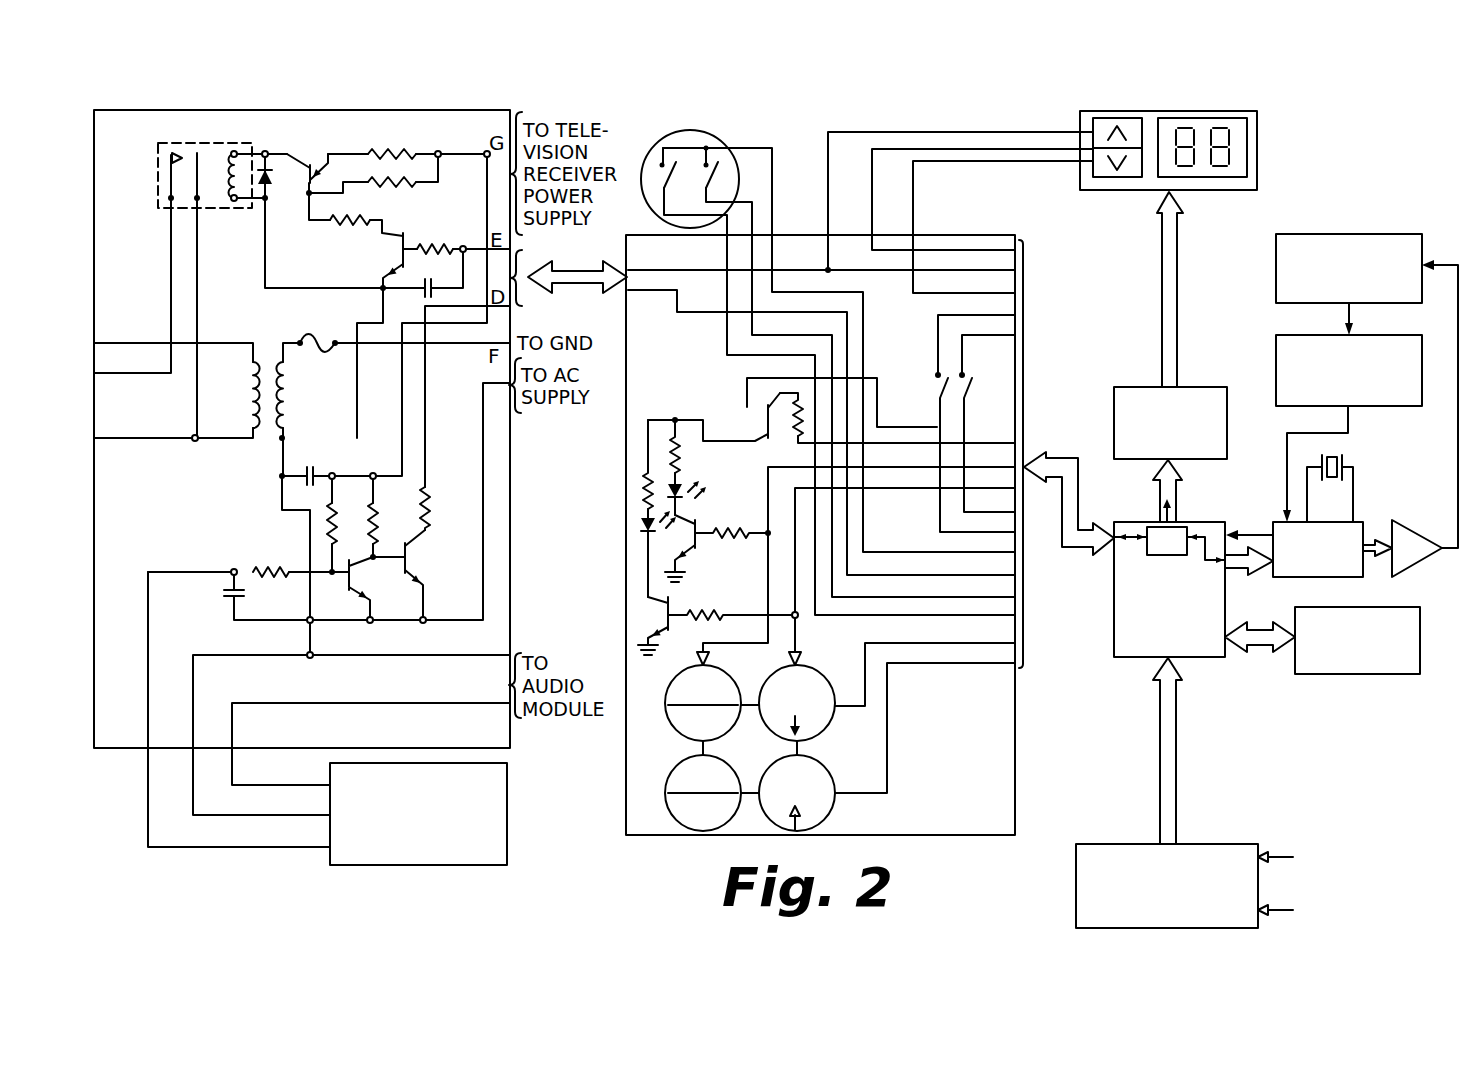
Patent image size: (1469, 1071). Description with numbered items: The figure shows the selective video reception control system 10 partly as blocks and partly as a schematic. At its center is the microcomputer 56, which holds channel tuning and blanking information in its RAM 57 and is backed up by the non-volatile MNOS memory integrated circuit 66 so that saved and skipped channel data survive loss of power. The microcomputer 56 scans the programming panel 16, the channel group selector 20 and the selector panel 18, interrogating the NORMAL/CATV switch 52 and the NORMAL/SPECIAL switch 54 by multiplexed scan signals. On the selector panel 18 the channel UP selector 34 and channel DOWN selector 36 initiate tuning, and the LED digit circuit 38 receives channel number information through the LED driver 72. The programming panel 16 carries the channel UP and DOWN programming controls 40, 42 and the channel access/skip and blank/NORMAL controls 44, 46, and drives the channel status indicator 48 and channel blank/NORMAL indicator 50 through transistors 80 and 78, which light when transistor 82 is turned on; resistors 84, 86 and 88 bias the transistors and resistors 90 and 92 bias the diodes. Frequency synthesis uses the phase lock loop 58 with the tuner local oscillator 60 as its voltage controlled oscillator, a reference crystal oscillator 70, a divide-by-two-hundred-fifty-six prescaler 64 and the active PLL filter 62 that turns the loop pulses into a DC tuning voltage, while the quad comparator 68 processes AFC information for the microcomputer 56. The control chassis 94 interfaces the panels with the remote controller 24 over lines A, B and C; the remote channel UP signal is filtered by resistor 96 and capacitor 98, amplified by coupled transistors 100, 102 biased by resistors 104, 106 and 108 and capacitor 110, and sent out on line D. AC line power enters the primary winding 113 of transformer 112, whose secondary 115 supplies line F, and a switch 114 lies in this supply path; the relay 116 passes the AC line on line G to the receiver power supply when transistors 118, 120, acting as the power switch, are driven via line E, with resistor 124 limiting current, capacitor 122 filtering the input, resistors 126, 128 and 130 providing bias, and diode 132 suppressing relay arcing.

The selective video reception control system 10 is at (1362, 725).
The programming panel 16 is at (660, 838).
The selector panel 18 is at (1169, 131).
The channel group selector 20 is at (683, 130).
The remote controller 24 is at (507, 818).
The channel UP selector 34 is at (1128, 125).
The channel DOWN selector 36 is at (1100, 167).
The LED digit circuit 38 is at (1235, 169).
The channel UP programming control 40 is at (835, 774).
The channel DOWN programming control 42 is at (833, 709).
The channel access/skip control 44 is at (670, 726).
The blank/NORMAL control 46 is at (665, 791).
The channel status indicator 48 is at (666, 482).
The channel blank/NORMAL indicator 50 is at (641, 524).
The NORMAL/CATV switch 52 is at (938, 373).
The NORMAL/SPECIAL (AFC) switch 54 is at (978, 358).
The microcomputer 56 is at (1169, 652).
The RAM 57 is at (1169, 545).
The phase lock loop 58 is at (1343, 578).
The tuner local oscillator 60 is at (1387, 234).
The active PLL filter 62 is at (1418, 562).
The prescaler 64 is at (1276, 351).
The MNOS memory integrated circuit 66 is at (1405, 675).
The quad comparator 68 is at (1245, 844).
The reference crystal oscillator 70 is at (1340, 456).
The LED driver 72 is at (1135, 386).
The transistor 78 is at (660, 614).
The transistor 80 is at (685, 538).
The transistor 82 is at (760, 412).
The resistor 84 is at (703, 607).
The resistor 86 is at (807, 395).
The resistor 88 is at (730, 530).
The resistor 90 is at (640, 494).
The resistor 92 is at (680, 457).
The control chassis 94 is at (385, 695).
The resistor 96 is at (273, 567).
The capacitor 98 is at (222, 593).
The transistor 100 is at (362, 582).
The transistor 102 is at (408, 558).
The resistor 104 is at (425, 504).
The resistor 106 is at (377, 518).
The resistor 108 is at (327, 528).
The capacitor 110 is at (312, 466).
The transformer 112 is at (260, 428).
The primary winding 113 is at (247, 398).
The switch 114 is at (315, 337).
The secondary 115 is at (286, 410).
The relay 116 is at (187, 143).
The transistor 118 is at (312, 165).
The transistor 120 is at (392, 252).
The capacitor 122 is at (420, 290).
The resistor 124 is at (435, 240).
The resistor 126 is at (357, 223).
The resistor 128 is at (393, 185).
The resistor 130 is at (400, 150).
The diode 132 is at (280, 177).